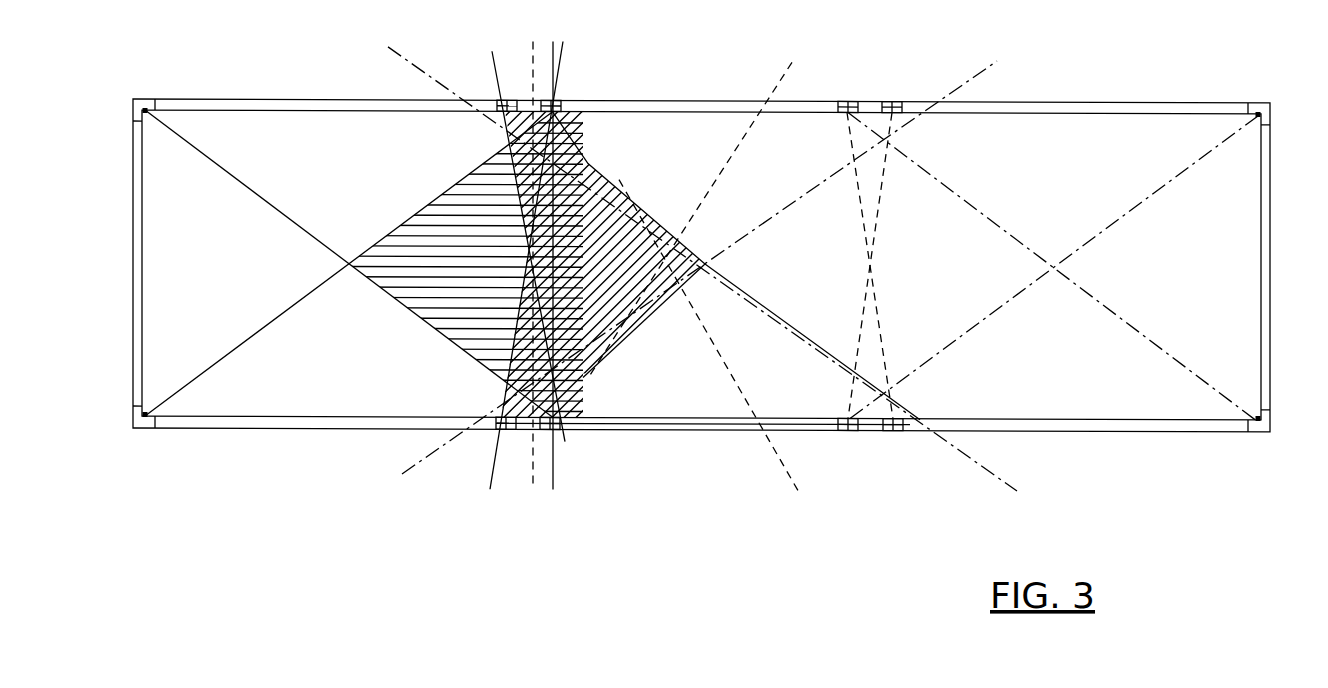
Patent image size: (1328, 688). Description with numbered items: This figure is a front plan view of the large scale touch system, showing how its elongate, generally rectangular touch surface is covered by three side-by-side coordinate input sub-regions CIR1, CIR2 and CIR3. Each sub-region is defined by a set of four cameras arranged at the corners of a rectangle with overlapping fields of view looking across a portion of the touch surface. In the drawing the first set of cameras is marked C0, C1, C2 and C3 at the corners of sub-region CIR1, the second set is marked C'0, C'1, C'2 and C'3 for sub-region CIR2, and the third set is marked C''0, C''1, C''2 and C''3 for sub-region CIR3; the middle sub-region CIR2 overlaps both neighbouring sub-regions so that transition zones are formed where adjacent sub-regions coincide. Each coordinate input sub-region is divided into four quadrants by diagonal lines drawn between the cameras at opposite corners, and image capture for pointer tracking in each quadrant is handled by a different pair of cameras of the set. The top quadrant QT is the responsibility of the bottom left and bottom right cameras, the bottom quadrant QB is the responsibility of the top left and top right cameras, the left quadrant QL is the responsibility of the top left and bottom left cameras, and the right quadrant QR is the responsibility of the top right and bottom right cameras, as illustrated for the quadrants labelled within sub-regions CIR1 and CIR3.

The bottom-left corner of first image region C0 is at (147, 414).
The top-left corner of first image region C1 is at (147, 112).
The top-right corner of first image region C2 is at (556, 100).
The bottom-right corner of first image region C3 is at (557, 428).
The bottom-left corner of second image region C'0 is at (516, 453).
The top-left corner of second image region C'1 is at (516, 73).
The top-right corner of second image region C'2 is at (911, 85).
The bottom-right corner of second image region C'3 is at (911, 455).
The bottom-left corner of third image region C''0 is at (837, 454).
The top-left corner of third image region C''1 is at (834, 84).
The top-right corner of third image region C''2 is at (1281, 104).
The bottom-right corner of third image region C''3 is at (1279, 443).
The top quadrant QT is at (708, 189).
The left quadrant QL is at (608, 269).
The right quadrant QR is at (813, 272).
The bottom quadrant QB is at (708, 343).
The first coordinate input sub-region CIR1 is at (485, 88).
The second coordinate input sub-region CIR2 is at (897, 507).
The third coordinate input sub-region CIR3 is at (1245, 53).